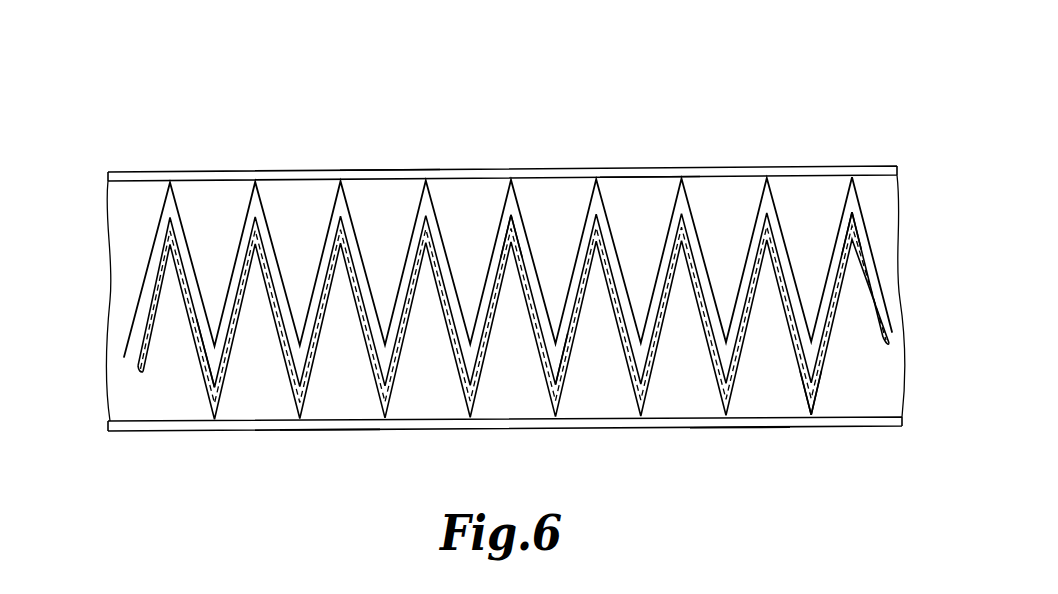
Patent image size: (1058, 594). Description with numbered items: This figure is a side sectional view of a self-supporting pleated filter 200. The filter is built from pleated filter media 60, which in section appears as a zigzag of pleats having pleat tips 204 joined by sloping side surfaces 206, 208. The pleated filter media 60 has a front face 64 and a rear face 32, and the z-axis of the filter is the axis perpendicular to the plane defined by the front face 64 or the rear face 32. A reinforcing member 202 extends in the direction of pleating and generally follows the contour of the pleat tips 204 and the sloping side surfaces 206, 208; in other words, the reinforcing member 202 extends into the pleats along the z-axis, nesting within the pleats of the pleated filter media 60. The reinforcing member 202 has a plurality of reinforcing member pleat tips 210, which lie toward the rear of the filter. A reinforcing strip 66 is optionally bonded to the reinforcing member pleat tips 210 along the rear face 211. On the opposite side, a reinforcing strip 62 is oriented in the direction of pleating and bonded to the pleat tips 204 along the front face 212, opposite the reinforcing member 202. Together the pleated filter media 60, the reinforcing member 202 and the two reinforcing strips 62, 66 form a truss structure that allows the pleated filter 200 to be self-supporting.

The self-supporting pleated filter 200 is at (775, 68).
The rear face 32 is at (303, 168).
The reinforcing strip 66 is at (387, 175).
The rear face 211 is at (647, 163).
The reinforcing strip 62 is at (423, 427).
The front face 64 is at (333, 434).
The front face 212 is at (735, 440).
The reinforcing member pleat tips 210 is at (168, 190).
The reinforcing member 202 is at (148, 270).
The sloping side surface 206 is at (513, 233).
The pleat tips 204 is at (853, 218).
The sloping side surface 208 is at (568, 368).
The pleated filter media 60 is at (198, 373).